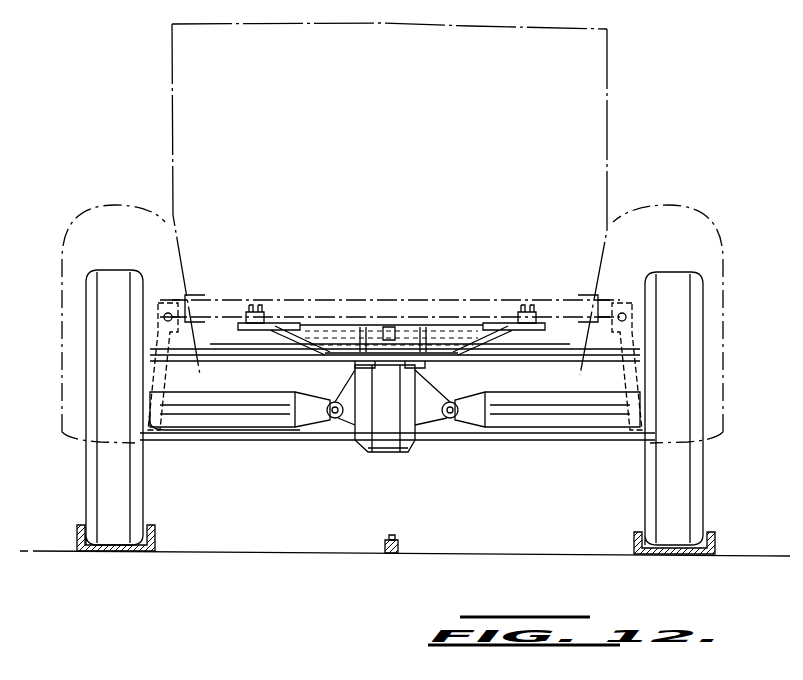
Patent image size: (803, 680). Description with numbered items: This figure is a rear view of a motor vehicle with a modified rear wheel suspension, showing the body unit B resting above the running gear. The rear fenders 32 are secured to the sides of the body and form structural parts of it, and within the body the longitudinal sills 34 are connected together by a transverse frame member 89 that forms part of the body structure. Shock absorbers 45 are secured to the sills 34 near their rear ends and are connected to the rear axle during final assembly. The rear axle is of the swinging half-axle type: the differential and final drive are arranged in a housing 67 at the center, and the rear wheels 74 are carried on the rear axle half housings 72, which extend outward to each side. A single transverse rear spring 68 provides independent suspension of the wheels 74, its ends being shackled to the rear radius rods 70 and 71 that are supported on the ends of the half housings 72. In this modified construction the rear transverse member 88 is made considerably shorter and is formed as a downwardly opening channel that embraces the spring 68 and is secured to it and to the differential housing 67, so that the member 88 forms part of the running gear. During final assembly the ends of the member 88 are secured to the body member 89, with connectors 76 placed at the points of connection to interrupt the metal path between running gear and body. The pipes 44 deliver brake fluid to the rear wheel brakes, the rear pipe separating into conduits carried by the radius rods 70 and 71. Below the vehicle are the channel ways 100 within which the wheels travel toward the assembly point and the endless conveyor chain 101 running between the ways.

The body unit B is at (572, 104).
The rear fenders 32 is at (78, 262).
The sills 34 is at (205, 300).
The pipes 44 is at (300, 433).
The shock absorbers 45 is at (160, 333).
The differential housing 67 is at (380, 452).
The rear spring 68 is at (508, 357).
The rear radius rod 70 is at (178, 442).
The rear radius rod 71 is at (465, 446).
The rear axle half housings 72 is at (255, 416).
The rear wheels 74 is at (100, 478).
The connectors 76 is at (266, 318).
The rear transverse member 88 is at (300, 330).
The transverse frame member 89 is at (403, 302).
The channel ways 100 is at (716, 549).
The endless conveyor chain 101 is at (400, 545).